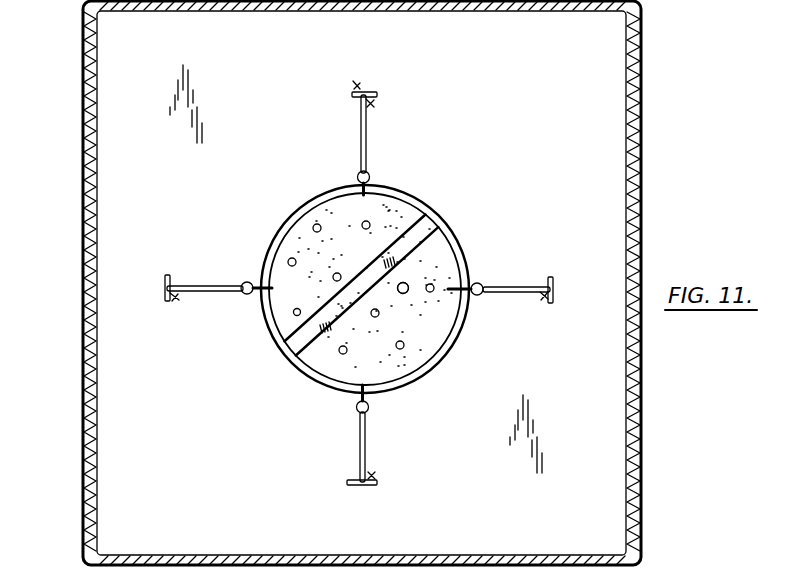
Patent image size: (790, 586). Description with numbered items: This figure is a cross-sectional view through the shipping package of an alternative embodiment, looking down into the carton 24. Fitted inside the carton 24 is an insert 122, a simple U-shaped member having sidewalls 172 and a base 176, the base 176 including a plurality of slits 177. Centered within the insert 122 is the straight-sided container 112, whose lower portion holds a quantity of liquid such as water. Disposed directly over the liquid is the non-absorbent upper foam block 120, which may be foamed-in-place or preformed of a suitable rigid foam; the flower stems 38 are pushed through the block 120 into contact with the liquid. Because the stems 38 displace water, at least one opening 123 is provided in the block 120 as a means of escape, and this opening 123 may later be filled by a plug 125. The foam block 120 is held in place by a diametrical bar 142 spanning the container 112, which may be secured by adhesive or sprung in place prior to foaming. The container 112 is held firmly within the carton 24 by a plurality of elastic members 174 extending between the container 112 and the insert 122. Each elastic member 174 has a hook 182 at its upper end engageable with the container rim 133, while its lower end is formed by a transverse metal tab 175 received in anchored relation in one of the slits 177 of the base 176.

The carton 24 is at (641, 92).
The sidewalls 172 is at (97, 169).
The base 176 is at (148, 414).
The insert 122 is at (134, 489).
The container 112 is at (293, 207).
The container rim 133 is at (401, 383).
The diametrical bar 142 is at (401, 232).
The non-absorbent upper foam block 120 is at (317, 363).
The plug 125 is at (410, 282).
The opening 123 is at (412, 295).
The flower stems 38 is at (292, 316).
The elastic members 174 is at (366, 132).
The slits 177 is at (352, 94).
The hooks 182 is at (357, 177).
The transverse metal tabs 175 is at (357, 83).